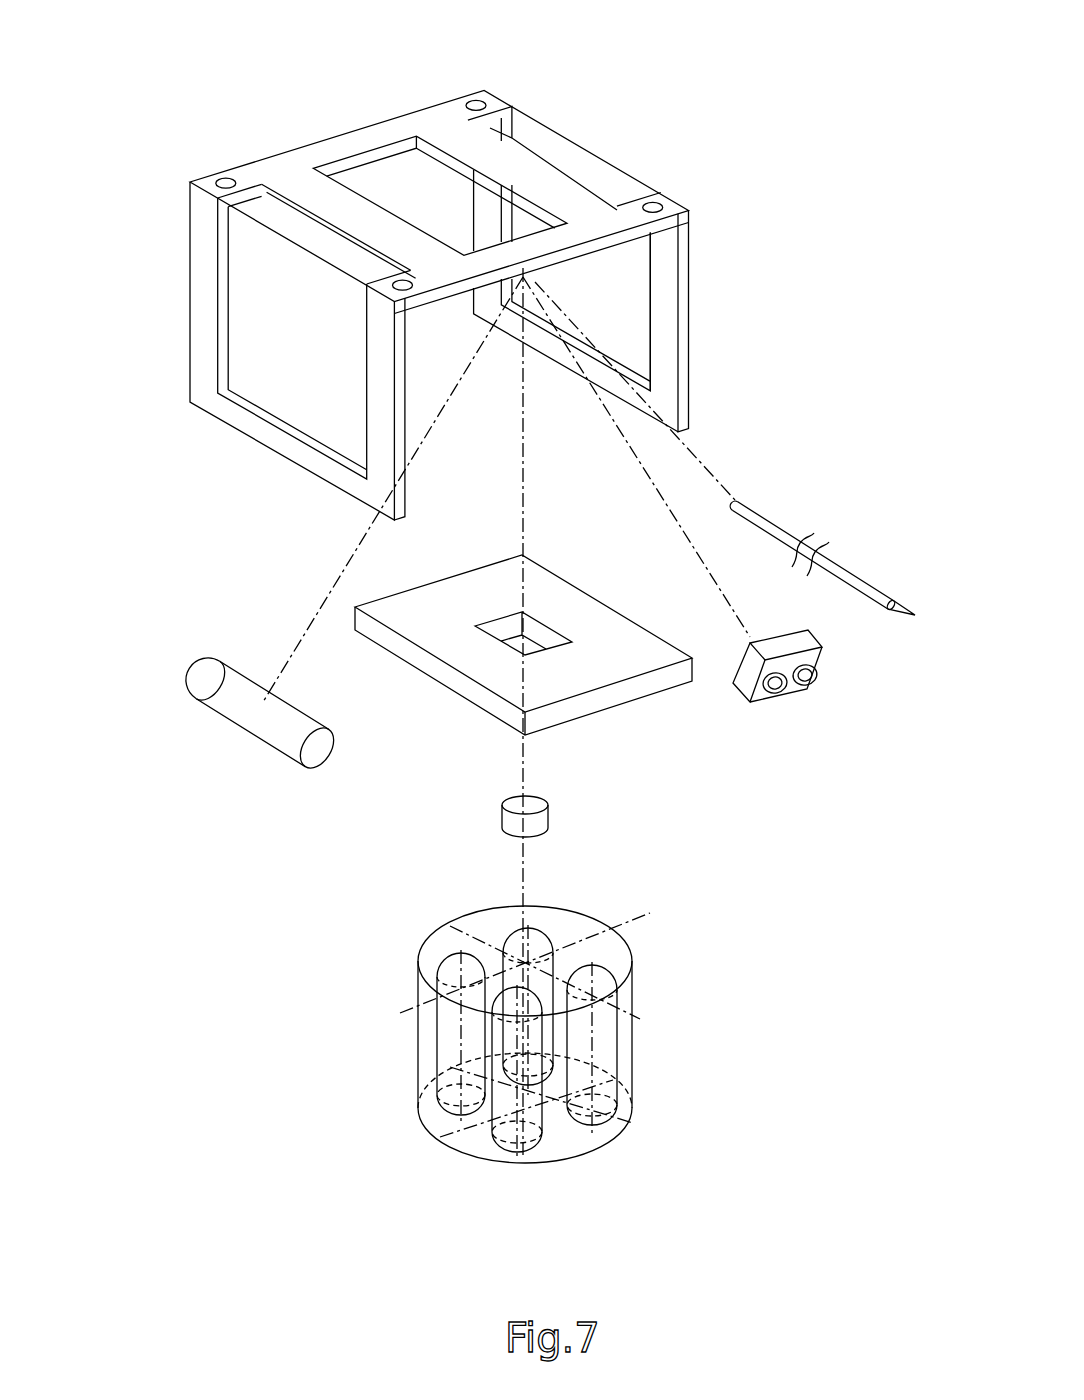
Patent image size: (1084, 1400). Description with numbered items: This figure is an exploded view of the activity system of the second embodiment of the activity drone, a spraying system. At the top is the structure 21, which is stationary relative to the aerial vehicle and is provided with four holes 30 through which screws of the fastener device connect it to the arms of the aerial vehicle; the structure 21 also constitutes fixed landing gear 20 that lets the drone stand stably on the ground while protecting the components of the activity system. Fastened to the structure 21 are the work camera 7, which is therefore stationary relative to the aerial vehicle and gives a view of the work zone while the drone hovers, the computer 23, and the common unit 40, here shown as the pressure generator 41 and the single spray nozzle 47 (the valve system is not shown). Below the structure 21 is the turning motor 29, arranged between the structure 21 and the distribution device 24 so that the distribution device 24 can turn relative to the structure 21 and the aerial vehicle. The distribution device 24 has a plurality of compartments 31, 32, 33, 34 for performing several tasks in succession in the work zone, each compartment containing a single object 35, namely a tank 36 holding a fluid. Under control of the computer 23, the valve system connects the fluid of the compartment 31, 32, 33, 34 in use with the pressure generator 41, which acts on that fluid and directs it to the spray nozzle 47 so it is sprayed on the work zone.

The work camera 7 is at (820, 657).
The fixed landing gear 20 is at (278, 447).
The structure 21 is at (419, 264).
The computer 23 is at (632, 620).
The distribution device 24 is at (528, 1026).
The turning motor 29 is at (553, 808).
The holes 30 is at (223, 182).
The compartment 31 is at (497, 915).
The compartment 32 is at (435, 945).
The compartment 33 is at (438, 1035).
The compartment 34 is at (612, 932).
The object 35 is at (528, 1047).
The tank 36 is at (540, 942).
The common unit 40 is at (535, 640).
The pressure generator 41 is at (262, 720).
The spray nozzle 47 is at (840, 553).